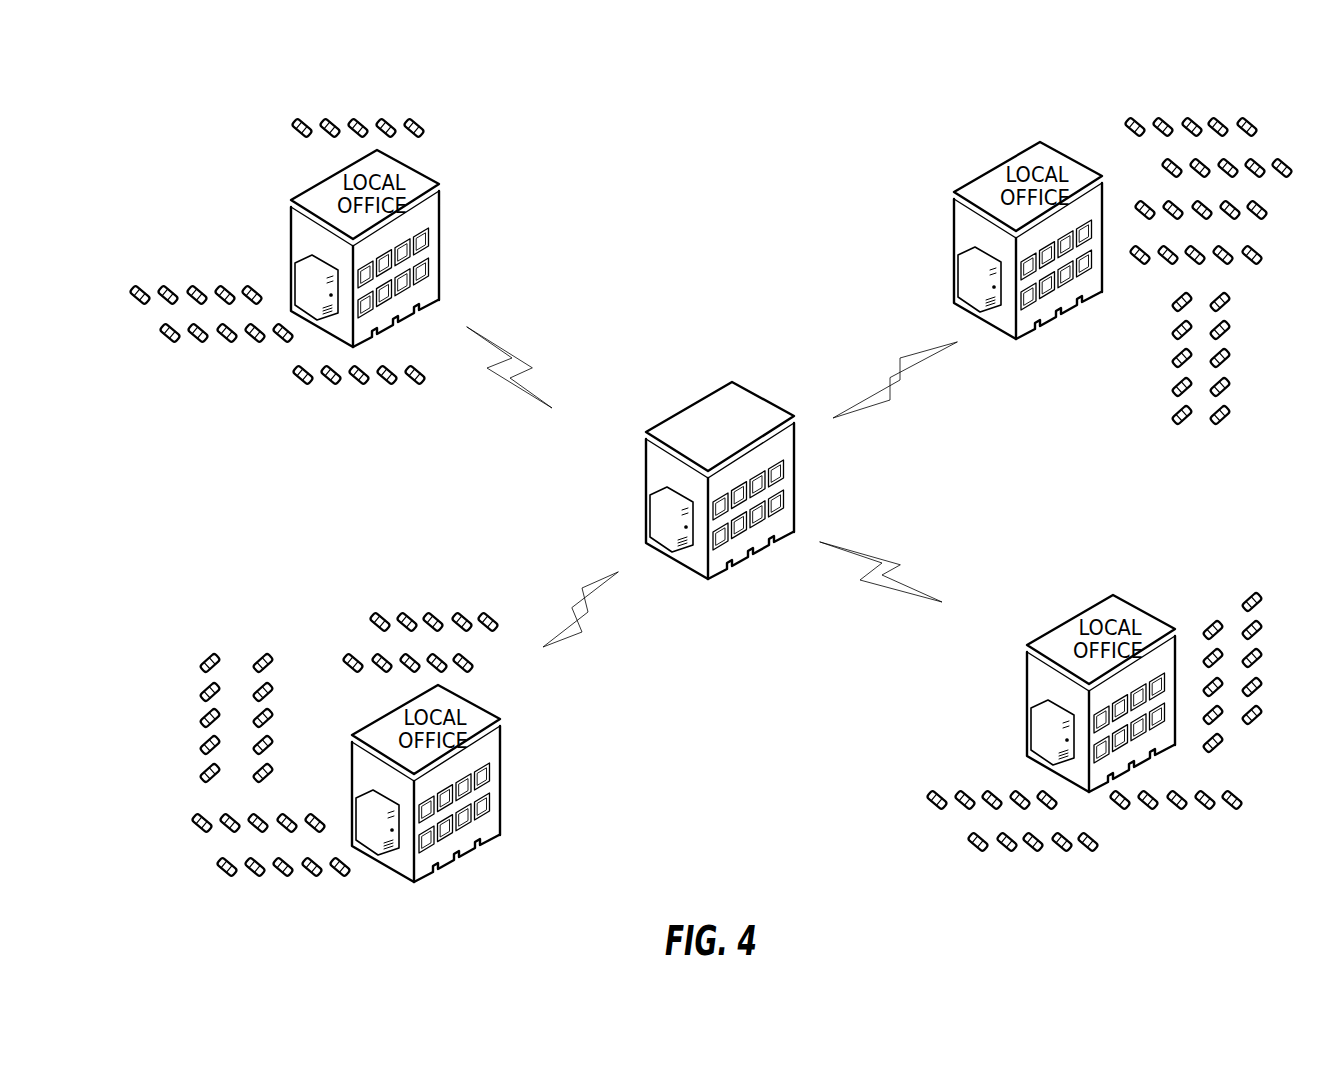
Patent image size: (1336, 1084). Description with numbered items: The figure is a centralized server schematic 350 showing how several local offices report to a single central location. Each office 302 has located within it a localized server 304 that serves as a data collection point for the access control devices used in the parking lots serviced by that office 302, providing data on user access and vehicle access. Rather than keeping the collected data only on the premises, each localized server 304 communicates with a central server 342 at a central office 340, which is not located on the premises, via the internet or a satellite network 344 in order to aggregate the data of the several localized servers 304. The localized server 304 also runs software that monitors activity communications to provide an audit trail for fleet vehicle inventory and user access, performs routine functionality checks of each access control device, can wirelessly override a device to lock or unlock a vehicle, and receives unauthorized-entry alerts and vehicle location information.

The office 302 is at (706, 507).
The localized server 304 is at (660, 532).
The central office 340 is at (697, 465).
The central server 342 is at (646, 502).
The internet or satellite network 344 is at (512, 370).
The centralized server schematic 350 is at (680, 108).